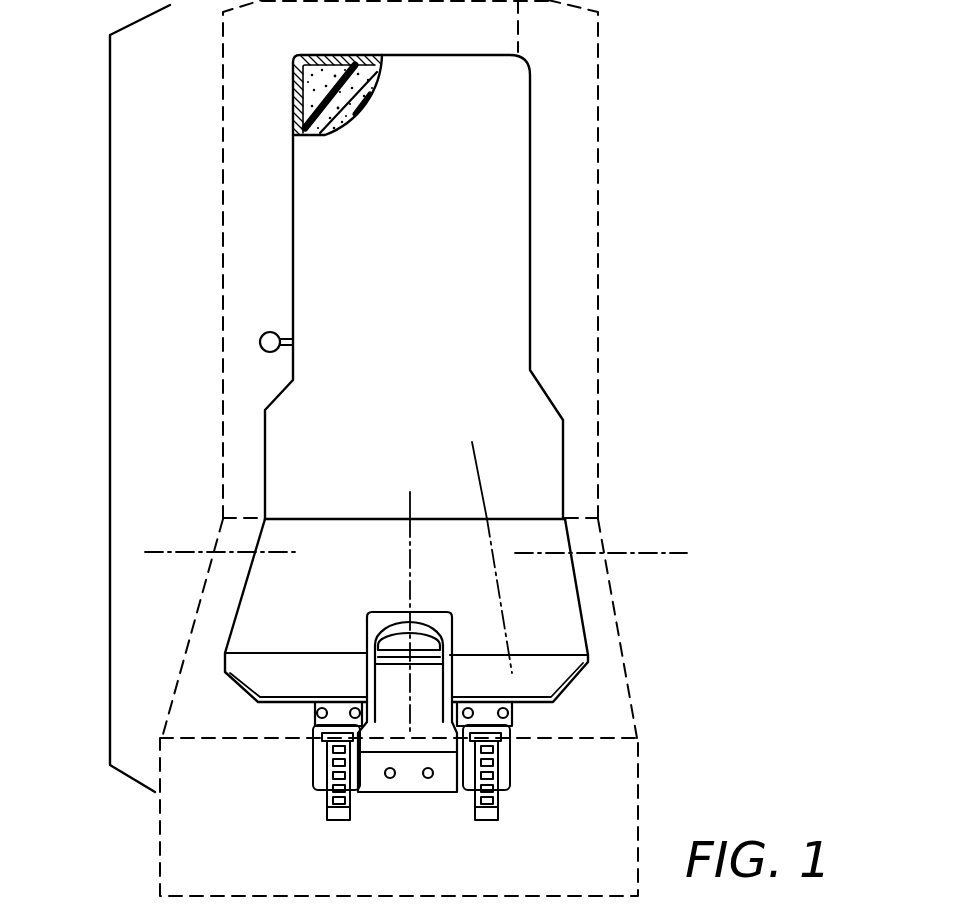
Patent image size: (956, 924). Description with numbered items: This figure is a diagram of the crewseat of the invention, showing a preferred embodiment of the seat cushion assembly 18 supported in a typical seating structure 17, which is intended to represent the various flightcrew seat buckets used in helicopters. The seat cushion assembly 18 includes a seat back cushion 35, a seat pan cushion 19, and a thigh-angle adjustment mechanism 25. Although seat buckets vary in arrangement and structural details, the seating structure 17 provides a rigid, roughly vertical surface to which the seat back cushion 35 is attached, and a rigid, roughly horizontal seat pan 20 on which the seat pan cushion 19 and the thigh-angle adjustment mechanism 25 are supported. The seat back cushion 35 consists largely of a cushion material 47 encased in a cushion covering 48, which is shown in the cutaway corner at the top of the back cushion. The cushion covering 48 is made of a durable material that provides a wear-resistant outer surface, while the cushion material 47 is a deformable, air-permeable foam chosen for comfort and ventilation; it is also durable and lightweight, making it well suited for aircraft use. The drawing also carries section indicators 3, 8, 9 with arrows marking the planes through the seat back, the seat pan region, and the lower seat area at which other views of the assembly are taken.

The section line 3- 3 is at (357, 502).
The section line 8- 8 is at (419, 449).
The section line 9- 9 is at (158, 535).
The seating structure 17 is at (580, 80).
The seat cushion assembly 18 is at (109, 365).
The seat pan cushion 19 is at (540, 542).
The seat pan 20 is at (597, 722).
The thigh-angle adjustment mechanism 25 is at (311, 758).
The seat back cushion 35 is at (428, 268).
The cushion material 47 is at (336, 104).
The cushion covering 48 is at (308, 56).